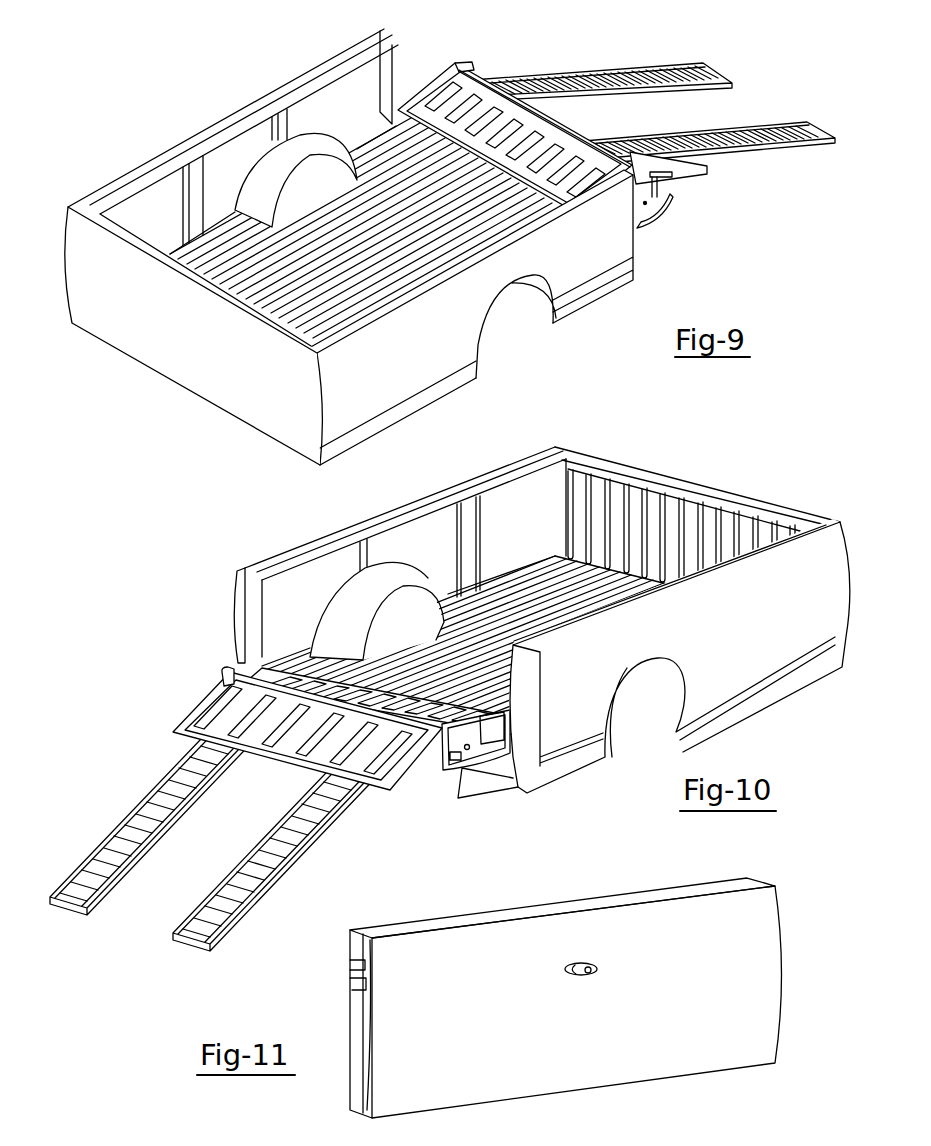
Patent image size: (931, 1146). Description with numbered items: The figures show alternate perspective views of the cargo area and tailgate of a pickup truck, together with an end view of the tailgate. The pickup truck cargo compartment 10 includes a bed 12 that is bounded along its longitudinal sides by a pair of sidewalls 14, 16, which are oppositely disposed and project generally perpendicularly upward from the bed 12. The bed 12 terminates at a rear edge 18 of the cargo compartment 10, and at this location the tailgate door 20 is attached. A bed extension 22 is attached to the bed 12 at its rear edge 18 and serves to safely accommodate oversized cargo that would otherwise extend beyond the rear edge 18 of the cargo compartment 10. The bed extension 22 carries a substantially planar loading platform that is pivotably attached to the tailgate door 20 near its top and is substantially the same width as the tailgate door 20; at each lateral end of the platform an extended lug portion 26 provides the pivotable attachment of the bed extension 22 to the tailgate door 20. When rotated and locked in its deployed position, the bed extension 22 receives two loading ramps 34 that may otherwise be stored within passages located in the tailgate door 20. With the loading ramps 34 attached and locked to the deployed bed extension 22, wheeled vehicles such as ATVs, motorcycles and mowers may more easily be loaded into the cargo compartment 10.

In FIG. 9, the pickup truck cargo compartment 10 is at (448, 240).
In FIG. 10, the pickup truck cargo compartment 10 is at (450, 688).
In FIG. 9, the bed 12 is at (360, 160).
In FIG. 10, the bed 12 is at (520, 584).
In FIG. 9, the sidewall 14 is at (525, 218).
In FIG. 10, the sidewall 14 is at (268, 568).
In FIG. 9, the sidewall 16 is at (303, 82).
In FIG. 10, the sidewall 16 is at (712, 571).
In FIG. 9, the rear edge 18 is at (418, 127).
In FIG. 10, the rear edge 18 is at (298, 660).
In FIG. 9, the tailgate door 20 is at (650, 222).
In FIG. 10, the tailgate door 20 is at (465, 772).
In FIG. 11, the tailgate door 20 is at (783, 967).
In FIG. 9, the bed extension 22 is at (497, 60).
In FIG. 10, the bed extension 22 is at (203, 697).
In FIG. 9, the extended lug portion 26 is at (673, 184).
In FIG. 10, the extended lug portion 26 is at (228, 670).
In FIG. 9, the loading ramp 34 is at (668, 66).
In FIG. 10, the loading ramp 34 is at (124, 820).